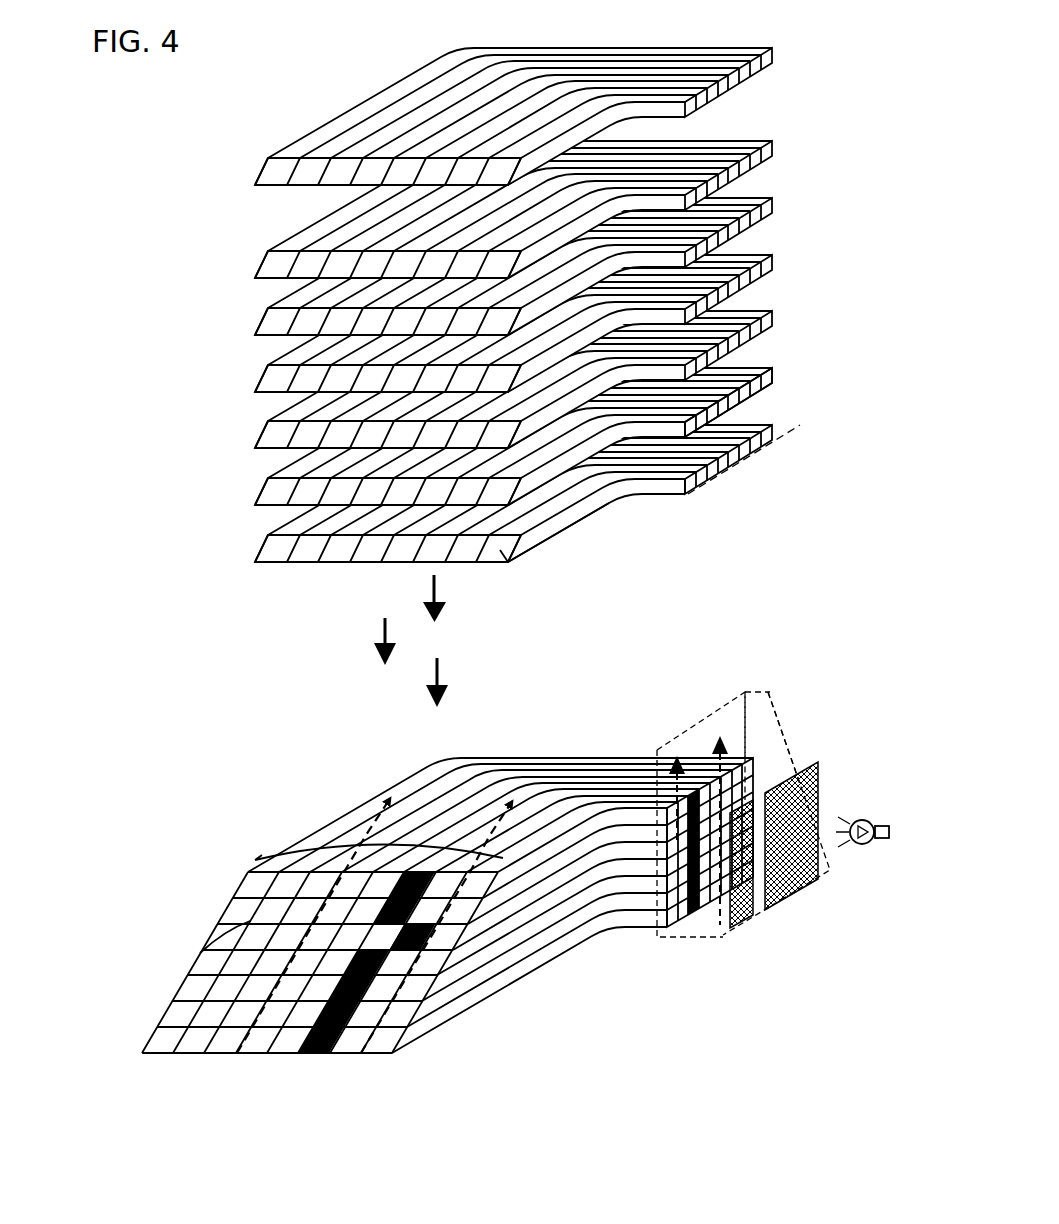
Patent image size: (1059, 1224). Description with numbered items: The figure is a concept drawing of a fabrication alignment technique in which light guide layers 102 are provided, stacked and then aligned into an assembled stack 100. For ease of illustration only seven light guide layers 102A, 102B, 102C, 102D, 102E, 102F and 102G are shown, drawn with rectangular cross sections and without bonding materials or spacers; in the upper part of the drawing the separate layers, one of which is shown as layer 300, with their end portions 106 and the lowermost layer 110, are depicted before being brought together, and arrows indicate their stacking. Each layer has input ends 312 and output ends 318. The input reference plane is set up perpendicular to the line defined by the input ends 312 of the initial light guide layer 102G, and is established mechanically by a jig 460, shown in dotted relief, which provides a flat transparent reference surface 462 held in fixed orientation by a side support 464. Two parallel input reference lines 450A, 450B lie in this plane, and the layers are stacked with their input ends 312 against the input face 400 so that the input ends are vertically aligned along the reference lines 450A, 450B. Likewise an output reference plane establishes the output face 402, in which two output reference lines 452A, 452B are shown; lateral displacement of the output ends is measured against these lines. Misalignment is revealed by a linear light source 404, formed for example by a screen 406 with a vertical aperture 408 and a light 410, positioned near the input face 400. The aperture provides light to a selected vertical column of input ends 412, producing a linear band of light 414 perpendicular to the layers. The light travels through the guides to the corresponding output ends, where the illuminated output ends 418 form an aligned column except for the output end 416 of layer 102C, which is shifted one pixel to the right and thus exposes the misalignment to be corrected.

The display assembly 100 is at (447, 890).
The light guide layers 102 is at (454, 313).
The first layer 102A is at (243, 874).
The second layer 102B is at (222, 911).
The light guide layer 102C is at (234, 933).
The fourth layer 102D is at (193, 959).
The fifth layer 102E is at (177, 987).
The sixth layer 102F is at (162, 1013).
The light guide layer 102G is at (144, 1042).
The input end of layer 106 is at (778, 365).
The bottom layer 110 is at (258, 545).
The waveguide layer 300 is at (579, 518).
The input ends 312 is at (716, 495).
The output ends 318 is at (500, 550).
The input face 400 is at (661, 760).
The output face 402 is at (374, 836).
The linear light source 404 is at (880, 940).
The screen 406 is at (818, 770).
The vertical aperture 408 is at (762, 905).
The light 410 is at (872, 815).
The selected linear plurality of single input ends 412 is at (710, 928).
The linear band of light 414 is at (655, 925).
The light emitting output end 416 is at (428, 952).
The aligned light emitting output ends 418 is at (335, 1060).
The input reference line 450A is at (672, 754).
The input reference line 450B is at (719, 734).
The output reference line 452A is at (389, 784).
The output reference line 452B is at (511, 790).
The jig 460 is at (777, 699).
The transparent reference surface 462 is at (745, 700).
The side support 464 is at (795, 742).